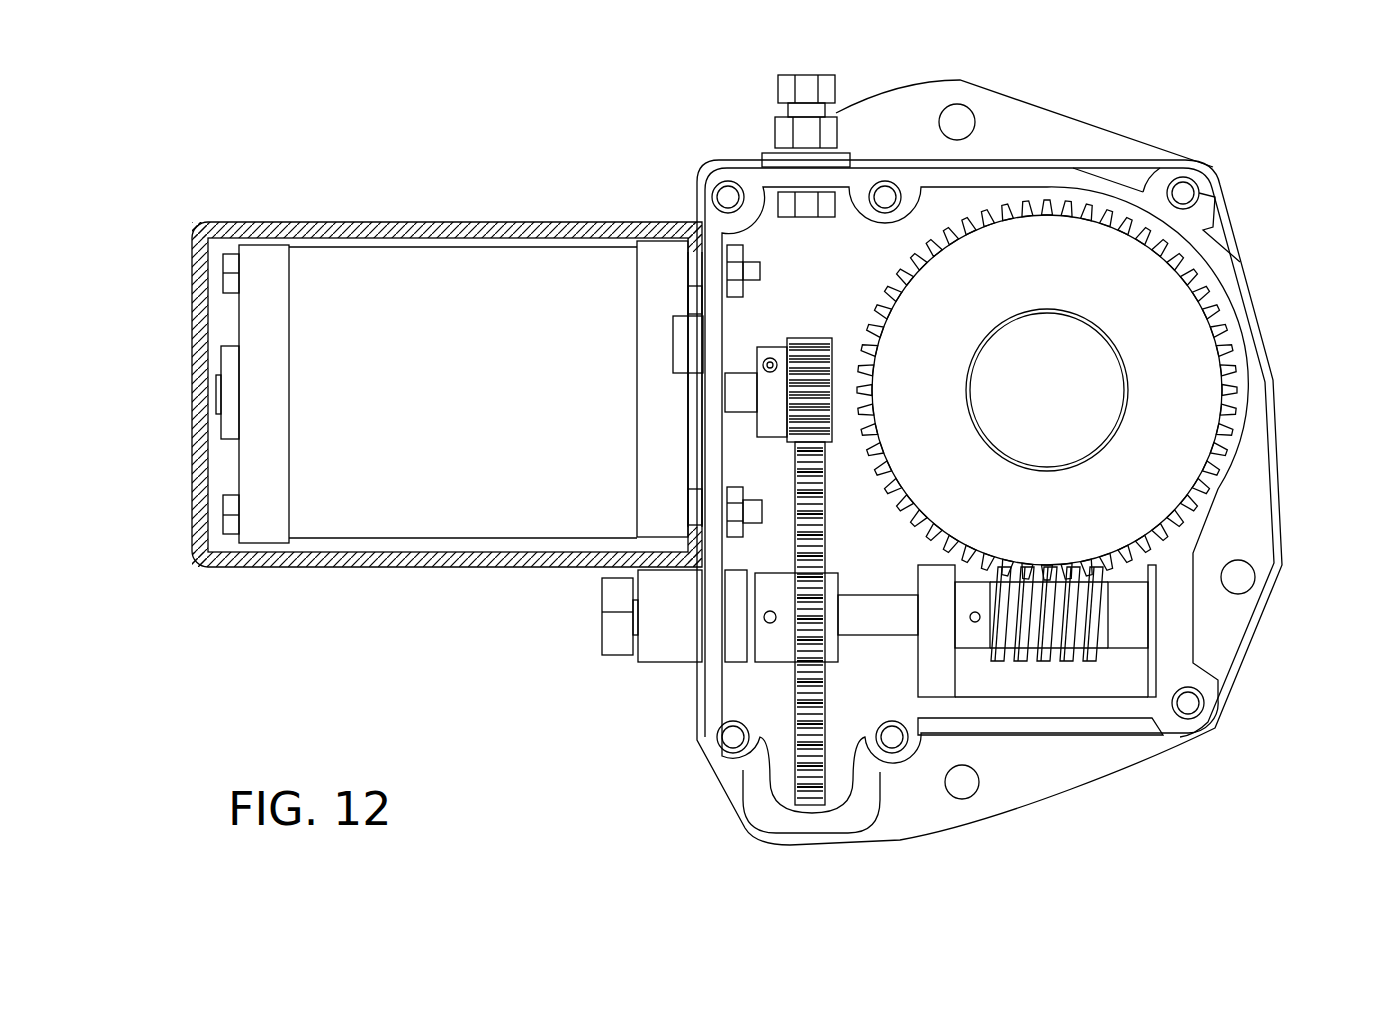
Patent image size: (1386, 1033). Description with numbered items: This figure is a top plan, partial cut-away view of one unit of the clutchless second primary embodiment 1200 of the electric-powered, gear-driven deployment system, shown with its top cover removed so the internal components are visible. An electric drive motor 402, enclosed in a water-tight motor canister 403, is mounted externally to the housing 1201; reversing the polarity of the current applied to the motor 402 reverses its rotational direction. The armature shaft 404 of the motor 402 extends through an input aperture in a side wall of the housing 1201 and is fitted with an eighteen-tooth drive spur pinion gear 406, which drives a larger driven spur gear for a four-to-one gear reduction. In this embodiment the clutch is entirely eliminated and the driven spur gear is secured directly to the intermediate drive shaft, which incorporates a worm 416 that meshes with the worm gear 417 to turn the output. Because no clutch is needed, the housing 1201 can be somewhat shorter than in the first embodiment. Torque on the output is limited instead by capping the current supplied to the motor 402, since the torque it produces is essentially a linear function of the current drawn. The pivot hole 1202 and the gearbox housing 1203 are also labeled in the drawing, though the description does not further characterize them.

The electric drive motor 402 is at (450, 290).
The water-tight motor canister 403 is at (530, 222).
The armature shaft 404 is at (742, 392).
The drive spur pinion gear 406 is at (804, 333).
The worm 416 is at (1045, 660).
The worm gear 417 is at (1218, 318).
The second primary embodiment 1200 is at (596, 115).
The housing 1201 is at (885, 610).
The pivot hole 1202 is at (768, 632).
The gearbox housing 1203 is at (1238, 490).